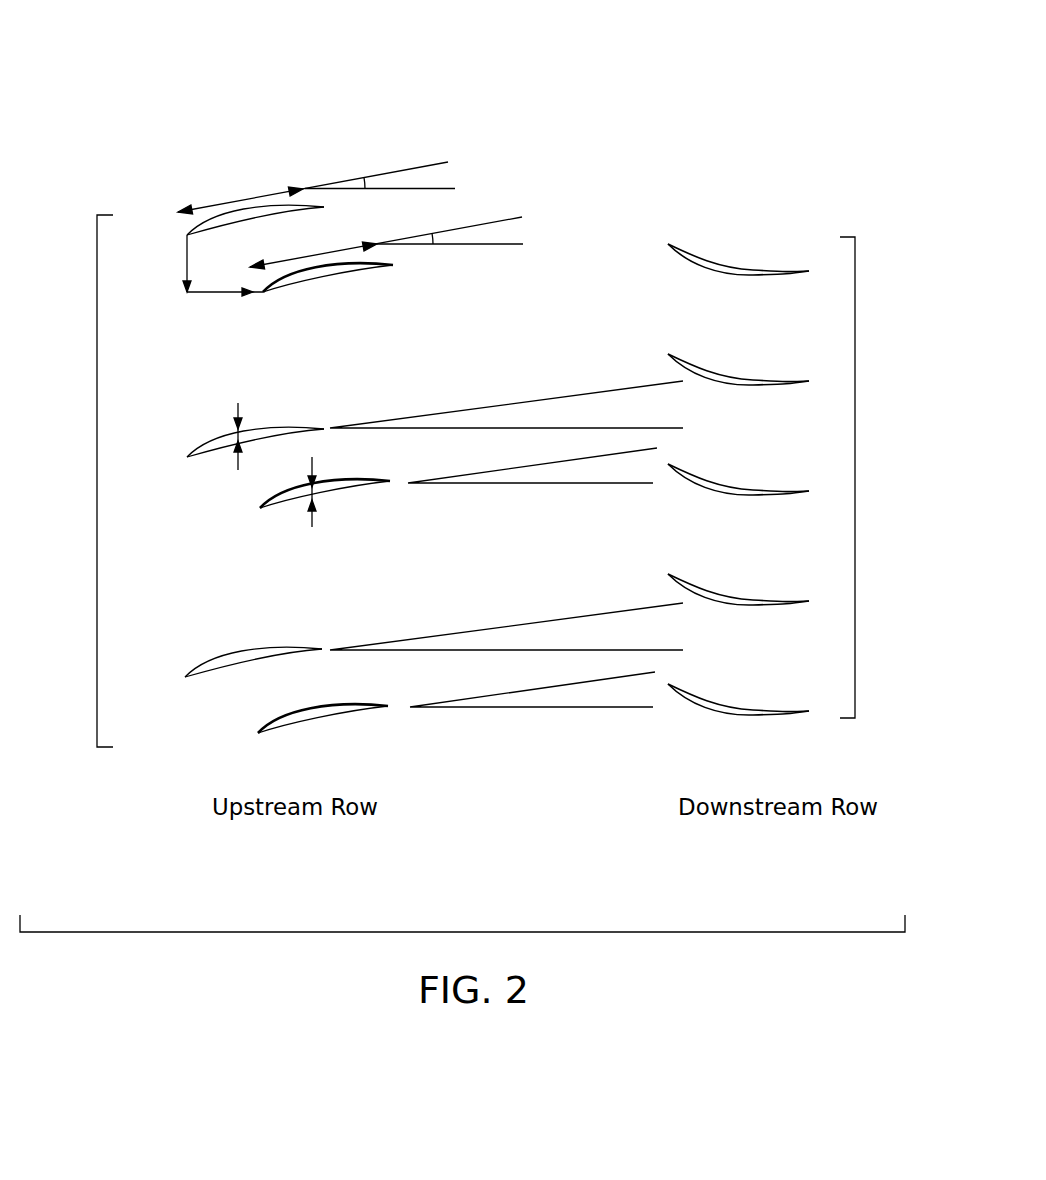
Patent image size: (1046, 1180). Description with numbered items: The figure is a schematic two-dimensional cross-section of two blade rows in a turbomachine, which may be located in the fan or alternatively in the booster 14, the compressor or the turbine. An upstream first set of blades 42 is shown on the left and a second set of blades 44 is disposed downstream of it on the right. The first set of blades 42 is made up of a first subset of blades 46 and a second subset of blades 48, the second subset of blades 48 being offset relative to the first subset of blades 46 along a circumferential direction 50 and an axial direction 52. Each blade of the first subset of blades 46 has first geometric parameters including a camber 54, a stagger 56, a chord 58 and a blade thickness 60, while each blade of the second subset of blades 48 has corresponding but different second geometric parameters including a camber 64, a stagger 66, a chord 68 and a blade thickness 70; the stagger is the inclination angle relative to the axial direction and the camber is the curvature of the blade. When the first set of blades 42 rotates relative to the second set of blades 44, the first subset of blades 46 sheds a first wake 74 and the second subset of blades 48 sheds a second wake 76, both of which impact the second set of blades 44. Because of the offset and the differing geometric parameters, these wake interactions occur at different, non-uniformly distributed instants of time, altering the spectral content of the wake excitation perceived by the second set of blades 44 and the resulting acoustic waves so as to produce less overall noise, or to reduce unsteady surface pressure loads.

The booster 14 is at (742, 67).
The first set of blades 42 is at (97, 480).
The second set of blades 44 is at (855, 480).
The first subset of blades 46 is at (205, 235).
The second subset of blades 48 is at (307, 282).
The circumferential direction 50 is at (186, 272).
The axial direction 52 is at (190, 293).
The camber 54 is at (258, 207).
The stagger 56 is at (366, 178).
The chord 58 is at (207, 206).
The blade thickness 60 is at (240, 412).
The camber 64 is at (330, 263).
The stagger 66 is at (438, 238).
The chord 68 is at (280, 268).
The blade thickness 70 is at (316, 460).
The first wake 74 is at (658, 424).
The second wake 76 is at (651, 478).